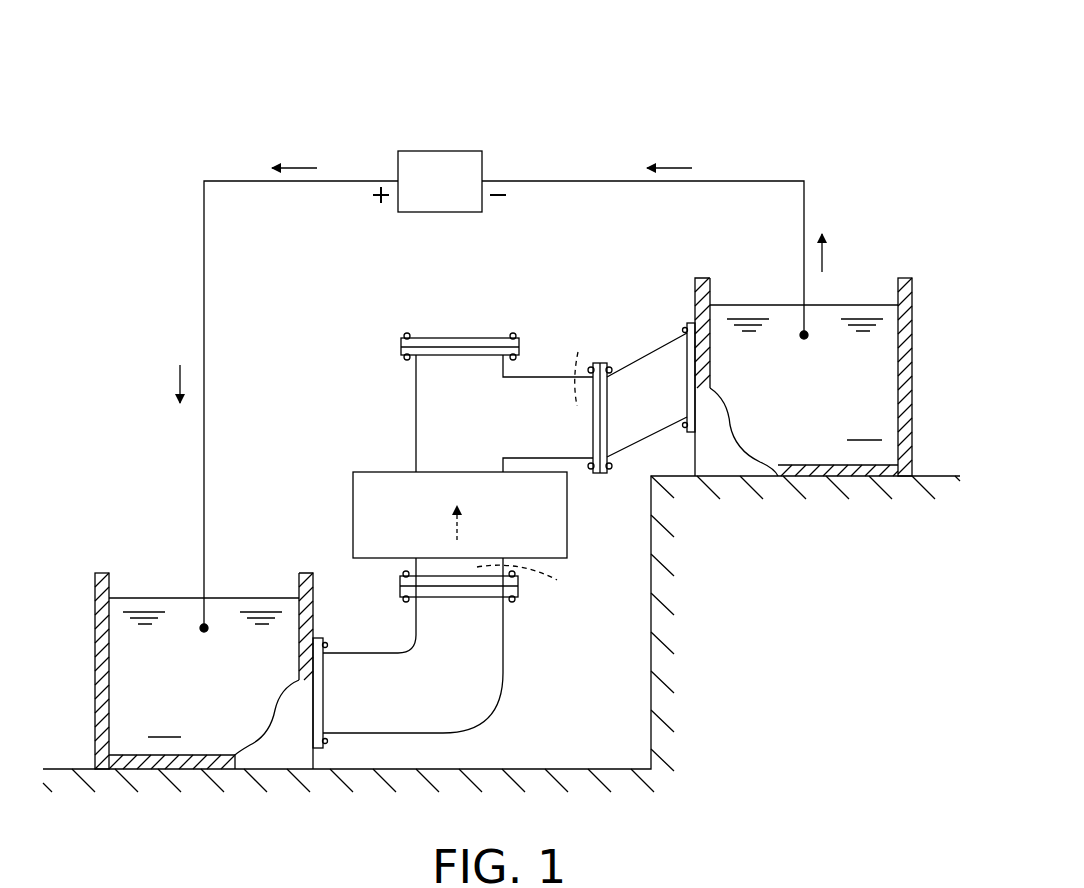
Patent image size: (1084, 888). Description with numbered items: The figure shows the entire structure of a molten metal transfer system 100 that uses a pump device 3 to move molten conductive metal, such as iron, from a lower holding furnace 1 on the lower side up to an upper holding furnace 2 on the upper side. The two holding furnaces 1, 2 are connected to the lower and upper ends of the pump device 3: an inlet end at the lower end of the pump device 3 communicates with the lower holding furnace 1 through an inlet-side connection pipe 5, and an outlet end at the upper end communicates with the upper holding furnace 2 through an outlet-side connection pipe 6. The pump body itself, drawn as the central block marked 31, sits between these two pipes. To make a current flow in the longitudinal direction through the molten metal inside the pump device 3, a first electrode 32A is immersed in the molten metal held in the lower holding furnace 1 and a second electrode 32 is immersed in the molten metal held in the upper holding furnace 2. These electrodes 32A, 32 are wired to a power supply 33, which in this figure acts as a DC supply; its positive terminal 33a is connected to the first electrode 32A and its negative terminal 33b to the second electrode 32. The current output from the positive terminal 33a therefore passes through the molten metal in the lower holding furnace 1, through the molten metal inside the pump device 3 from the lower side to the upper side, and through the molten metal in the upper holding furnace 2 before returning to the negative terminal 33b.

The molten metal transfer system 100 is at (778, 60).
The lower holding furnace 1 is at (97, 675).
The upper holding furnace 2 is at (905, 368).
The pump device 3 is at (447, 443).
The pump 31 is at (340, 514).
The second electrode 32 is at (804, 341).
The first electrode 32A is at (204, 634).
The power supply 33 is at (442, 164).
The positive terminal 33a is at (396, 181).
The negative terminal 33b is at (484, 181).
The inlet-side connection pipe 5 is at (487, 670).
The outlet-side connection pipe 6 is at (646, 376).